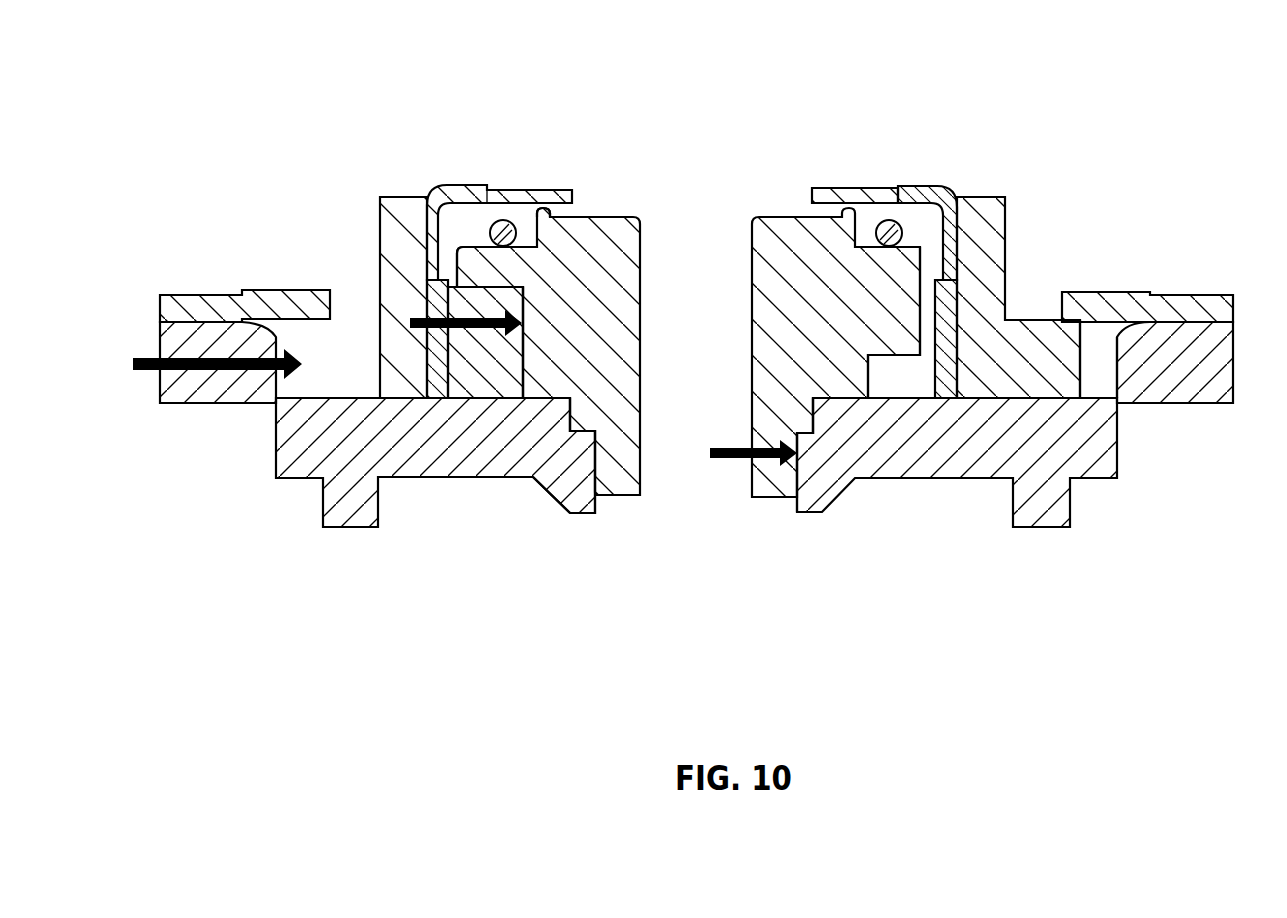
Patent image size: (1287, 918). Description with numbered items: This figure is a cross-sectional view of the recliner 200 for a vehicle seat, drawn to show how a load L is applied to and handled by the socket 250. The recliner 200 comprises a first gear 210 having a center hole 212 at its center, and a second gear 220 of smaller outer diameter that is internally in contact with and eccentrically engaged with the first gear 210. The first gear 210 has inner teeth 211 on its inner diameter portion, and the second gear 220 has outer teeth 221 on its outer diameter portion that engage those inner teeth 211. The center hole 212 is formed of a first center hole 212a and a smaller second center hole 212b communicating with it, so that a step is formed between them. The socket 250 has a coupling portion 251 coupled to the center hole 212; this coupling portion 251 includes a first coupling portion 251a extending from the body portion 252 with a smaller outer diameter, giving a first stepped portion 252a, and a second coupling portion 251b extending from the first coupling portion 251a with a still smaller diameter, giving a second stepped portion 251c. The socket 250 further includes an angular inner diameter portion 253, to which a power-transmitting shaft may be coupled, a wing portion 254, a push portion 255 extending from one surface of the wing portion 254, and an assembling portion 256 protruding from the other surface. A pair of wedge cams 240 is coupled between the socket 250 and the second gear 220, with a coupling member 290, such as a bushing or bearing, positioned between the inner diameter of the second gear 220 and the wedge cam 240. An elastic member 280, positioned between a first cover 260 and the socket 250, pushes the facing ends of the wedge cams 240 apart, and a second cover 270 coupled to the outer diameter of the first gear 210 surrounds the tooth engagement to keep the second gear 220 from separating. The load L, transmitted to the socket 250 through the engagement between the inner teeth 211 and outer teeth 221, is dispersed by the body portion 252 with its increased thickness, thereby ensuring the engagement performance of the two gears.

The recliner 200 is at (578, 82).
The load L is at (148, 357).
The first gear 210 is at (957, 460).
The inner teeth 211 is at (1117, 367).
The center hole 212 is at (820, 643).
The first center hole 212a is at (820, 413).
The second center hole 212b is at (805, 476).
The second gear 220 is at (993, 357).
The outer teeth 221 is at (1083, 358).
The wedge cam 240 is at (482, 370).
The socket 250 is at (792, 213).
The coupling portion 251 is at (682, 670).
The first coupling portion 251a is at (580, 410).
The second coupling portion 251b is at (612, 487).
The second stepped portion 251c is at (583, 437).
The body portion 252 is at (540, 342).
The first stepped portion 252a is at (557, 362).
The inner diameter portion 253 is at (646, 262).
The wing portion 254 is at (460, 262).
The push portion 255 is at (902, 322).
The assembling portion 256 is at (543, 237).
The first cover 260 is at (830, 197).
The second cover 270 is at (1190, 300).
The elastic member 280 is at (880, 223).
The coupling member 290 is at (438, 375).